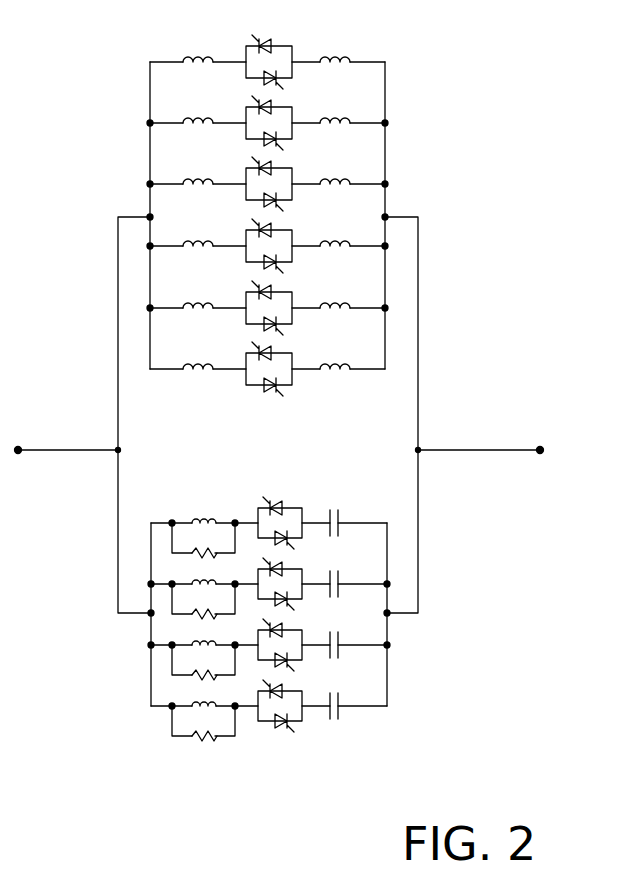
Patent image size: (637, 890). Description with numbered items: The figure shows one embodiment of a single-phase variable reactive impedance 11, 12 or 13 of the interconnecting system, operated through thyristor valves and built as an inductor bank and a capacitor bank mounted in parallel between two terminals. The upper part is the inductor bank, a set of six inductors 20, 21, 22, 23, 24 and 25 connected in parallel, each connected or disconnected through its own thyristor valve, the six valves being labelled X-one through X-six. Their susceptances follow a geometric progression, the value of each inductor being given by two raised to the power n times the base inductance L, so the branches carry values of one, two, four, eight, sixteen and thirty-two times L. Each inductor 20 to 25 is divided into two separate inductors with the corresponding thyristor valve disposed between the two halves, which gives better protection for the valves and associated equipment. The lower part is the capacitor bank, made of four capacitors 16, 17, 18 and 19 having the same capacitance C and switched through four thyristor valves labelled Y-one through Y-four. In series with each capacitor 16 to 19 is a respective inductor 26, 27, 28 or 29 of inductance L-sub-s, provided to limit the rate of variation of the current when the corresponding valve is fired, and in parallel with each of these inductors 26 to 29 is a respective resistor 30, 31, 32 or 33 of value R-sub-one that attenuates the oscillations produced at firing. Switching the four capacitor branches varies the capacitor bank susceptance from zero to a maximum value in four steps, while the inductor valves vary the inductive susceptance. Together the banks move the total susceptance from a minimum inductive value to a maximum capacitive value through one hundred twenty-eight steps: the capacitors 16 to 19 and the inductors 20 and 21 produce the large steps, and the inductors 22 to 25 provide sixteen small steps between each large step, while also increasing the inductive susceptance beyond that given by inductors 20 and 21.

The single-phase variable reactive impedance 11 is at (452, 84).
The single-phase variable reactive impedance 12 is at (281, 385).
The single-phase variable reactive impedance 13 is at (281, 385).
The capacitor 16 is at (340, 529).
The capacitor 17 is at (340, 590).
The capacitor 18 is at (340, 651).
The capacitor 19 is at (340, 712).
The inductor 20 is at (330, 67).
The inductor 21 is at (330, 128).
The inductor 22 is at (330, 189).
The inductor 23 is at (330, 251).
The inductor 24 is at (330, 313).
The inductor 25 is at (330, 374).
The inductor 26 is at (192, 519).
The inductor 27 is at (192, 580).
The inductor 28 is at (192, 641).
The inductor 29 is at (192, 702).
The resistor 30 is at (224, 552).
The resistor 31 is at (224, 613).
The resistor 32 is at (224, 674).
The resistor 33 is at (208, 738).